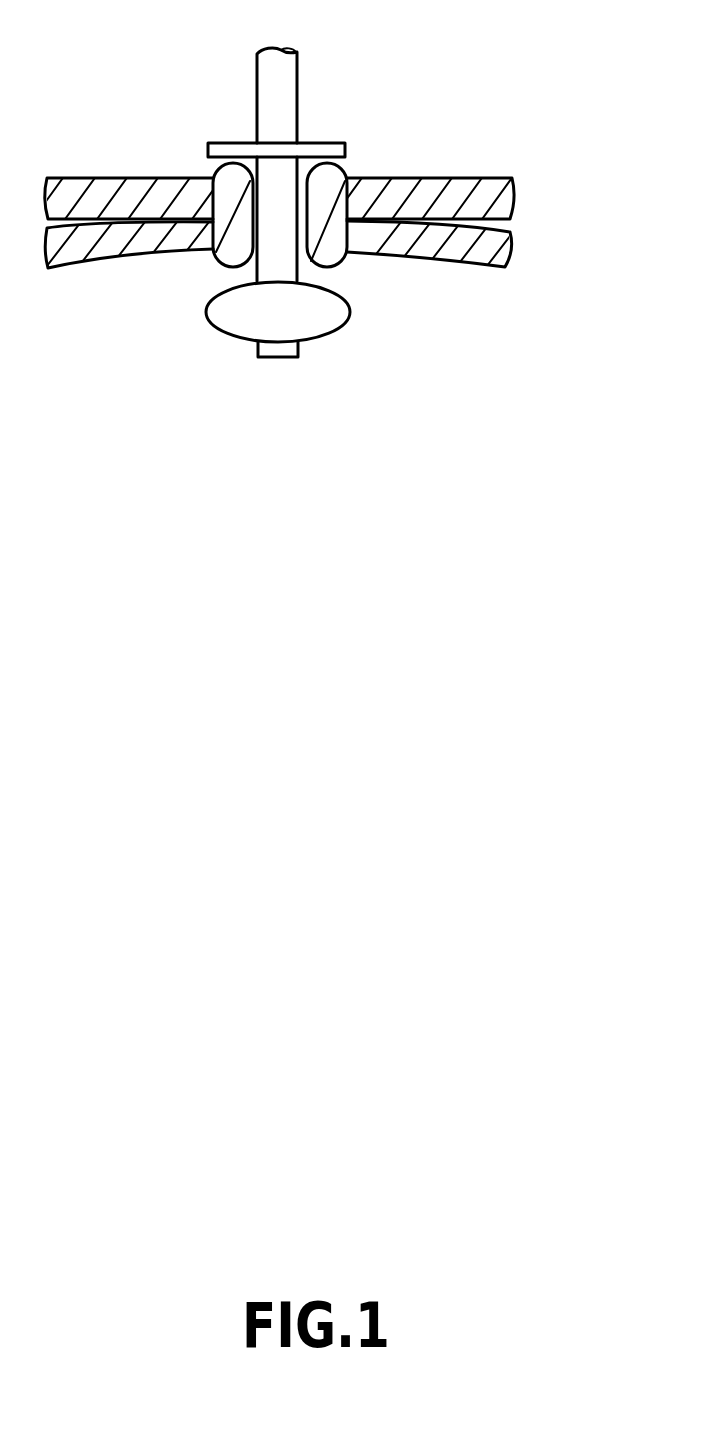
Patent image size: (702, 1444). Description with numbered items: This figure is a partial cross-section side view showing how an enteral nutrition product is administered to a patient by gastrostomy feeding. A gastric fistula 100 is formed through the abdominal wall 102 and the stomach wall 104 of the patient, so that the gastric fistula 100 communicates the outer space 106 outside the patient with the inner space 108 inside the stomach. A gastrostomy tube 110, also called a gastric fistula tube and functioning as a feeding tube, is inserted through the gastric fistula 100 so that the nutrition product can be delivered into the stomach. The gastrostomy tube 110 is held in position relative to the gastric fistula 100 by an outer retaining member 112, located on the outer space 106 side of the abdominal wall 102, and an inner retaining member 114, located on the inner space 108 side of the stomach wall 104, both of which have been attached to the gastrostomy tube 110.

The gastric fistula 100 is at (330, 180).
The abdominal wall 102 is at (463, 188).
The stomach wall 104 is at (465, 247).
The outer space 106 is at (124, 105).
The inner space 108 is at (124, 387).
The gastrostomy tube 110 is at (290, 83).
The outer retaining member 112 is at (325, 148).
The inner retaining member 114 is at (322, 323).